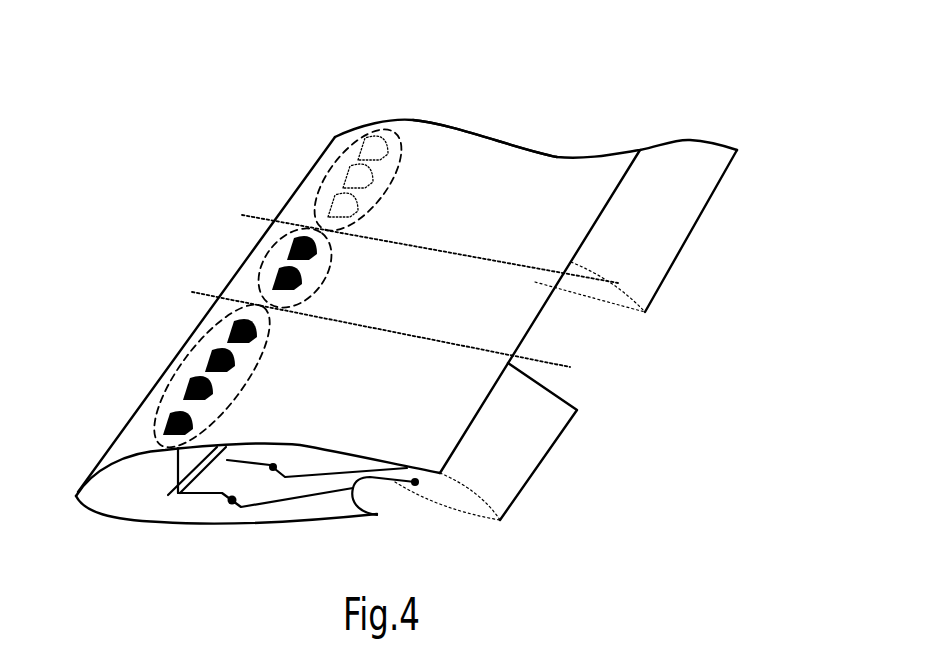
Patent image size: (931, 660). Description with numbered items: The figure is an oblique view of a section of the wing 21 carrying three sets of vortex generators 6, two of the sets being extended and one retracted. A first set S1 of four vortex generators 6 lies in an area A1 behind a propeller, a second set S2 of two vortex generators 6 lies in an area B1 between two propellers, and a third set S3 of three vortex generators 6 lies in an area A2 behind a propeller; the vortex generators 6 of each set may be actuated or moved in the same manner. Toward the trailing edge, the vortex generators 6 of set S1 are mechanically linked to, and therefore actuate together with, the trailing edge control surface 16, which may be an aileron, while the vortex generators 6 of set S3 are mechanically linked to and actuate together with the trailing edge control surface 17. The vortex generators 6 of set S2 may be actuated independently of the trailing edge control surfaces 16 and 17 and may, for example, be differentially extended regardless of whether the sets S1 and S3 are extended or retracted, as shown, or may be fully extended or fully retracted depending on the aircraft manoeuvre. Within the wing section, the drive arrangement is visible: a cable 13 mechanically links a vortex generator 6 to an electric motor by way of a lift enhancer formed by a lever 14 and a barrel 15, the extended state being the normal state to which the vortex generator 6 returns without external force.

The vortex generator 6 is at (347, 170).
The cable 13 is at (180, 462).
The lever 14 is at (232, 502).
The barrel 15 is at (177, 495).
The trailing edge control surface 16 is at (535, 442).
The trailing edge control surface 17 is at (692, 160).
The wing 21 is at (558, 157).
The first set of vortex generators S1 is at (160, 415).
The second set of vortex generators S2 is at (322, 275).
The third set of vortex generators S3 is at (402, 140).
The area behind a propeller A1 is at (413, 411).
The area behind a propeller A2 is at (487, 227).
The area between two propellers B1 is at (450, 309).